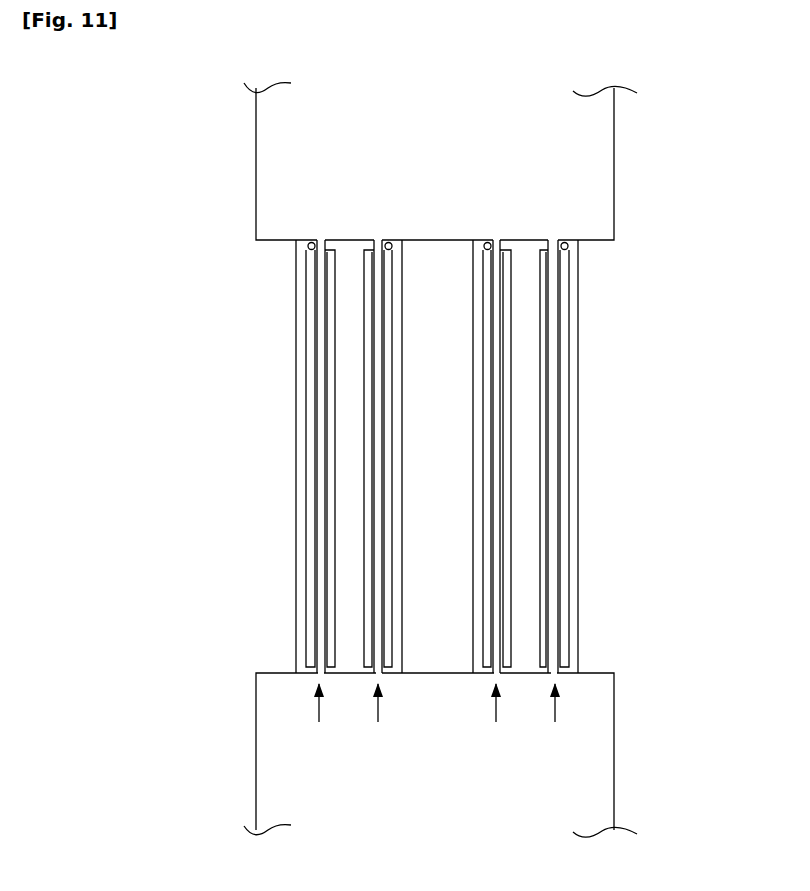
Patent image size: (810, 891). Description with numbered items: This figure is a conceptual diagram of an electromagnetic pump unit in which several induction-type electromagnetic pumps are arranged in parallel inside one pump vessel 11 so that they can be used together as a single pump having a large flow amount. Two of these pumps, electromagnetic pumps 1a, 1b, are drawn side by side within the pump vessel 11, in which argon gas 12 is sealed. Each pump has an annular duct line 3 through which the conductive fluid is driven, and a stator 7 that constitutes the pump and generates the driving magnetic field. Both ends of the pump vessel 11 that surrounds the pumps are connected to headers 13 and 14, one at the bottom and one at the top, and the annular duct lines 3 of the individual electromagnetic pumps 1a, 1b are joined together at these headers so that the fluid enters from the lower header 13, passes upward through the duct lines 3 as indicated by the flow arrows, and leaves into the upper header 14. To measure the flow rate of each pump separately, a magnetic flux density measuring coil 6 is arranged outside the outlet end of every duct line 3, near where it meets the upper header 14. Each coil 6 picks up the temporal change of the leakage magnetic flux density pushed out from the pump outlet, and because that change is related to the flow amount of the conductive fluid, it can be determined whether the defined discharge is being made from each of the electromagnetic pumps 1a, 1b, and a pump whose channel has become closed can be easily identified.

The header 14 is at (616, 132).
The header 13 is at (616, 745).
The magnetic flux density measuring coil 6 is at (308, 246).
The argon gas 12 is at (352, 334).
The duct line 3 is at (552, 335).
The stator 7 is at (565, 390).
The pump vessel 11 is at (296, 408).
The electromagnetic pump 1a is at (301, 546).
The electromagnetic pump 1b is at (575, 530).